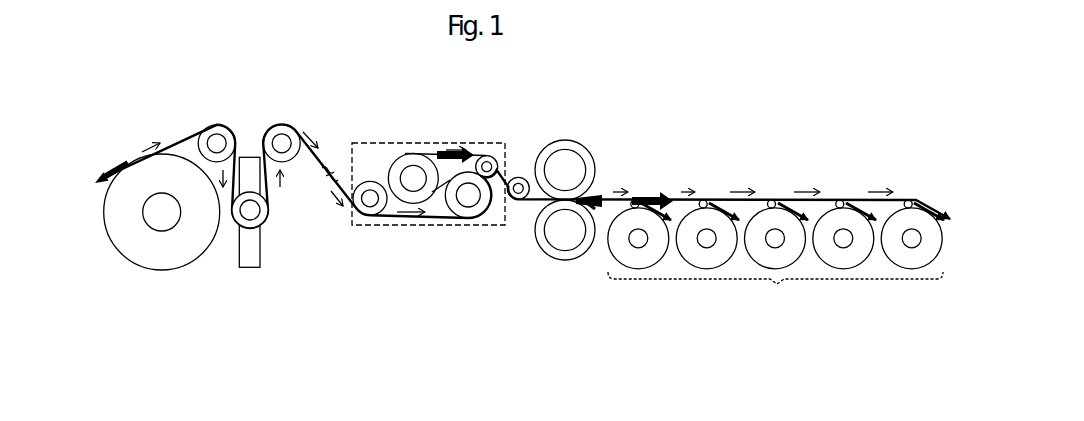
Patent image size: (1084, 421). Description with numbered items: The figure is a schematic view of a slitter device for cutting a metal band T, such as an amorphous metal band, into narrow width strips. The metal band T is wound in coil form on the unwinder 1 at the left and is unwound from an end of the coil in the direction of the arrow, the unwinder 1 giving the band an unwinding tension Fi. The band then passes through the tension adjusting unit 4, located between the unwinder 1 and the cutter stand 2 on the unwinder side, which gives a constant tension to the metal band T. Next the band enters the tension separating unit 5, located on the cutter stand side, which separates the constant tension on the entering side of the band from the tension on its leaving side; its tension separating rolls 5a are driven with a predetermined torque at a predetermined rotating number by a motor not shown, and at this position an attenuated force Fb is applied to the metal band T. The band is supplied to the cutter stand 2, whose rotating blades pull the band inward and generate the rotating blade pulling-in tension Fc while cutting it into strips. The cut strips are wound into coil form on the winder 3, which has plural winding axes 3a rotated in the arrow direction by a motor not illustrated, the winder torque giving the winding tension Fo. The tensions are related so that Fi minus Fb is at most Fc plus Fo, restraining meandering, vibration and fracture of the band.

The unwinder 1 is at (130, 268).
The metal band T is at (173, 137).
The unwinding tension Fi is at (120, 167).
The tension adjusting unit 4 is at (264, 268).
The tension separating unit 5 is at (426, 242).
The tension separating roll 5a is at (410, 173).
The attenuated force Fb is at (422, 153).
The cutter stand 2 is at (582, 130).
The rotating blade pulling-in tension Fc is at (600, 190).
The winding tension Fo is at (660, 188).
The winding axes 3a is at (632, 240).
The winder 3 is at (775, 293).